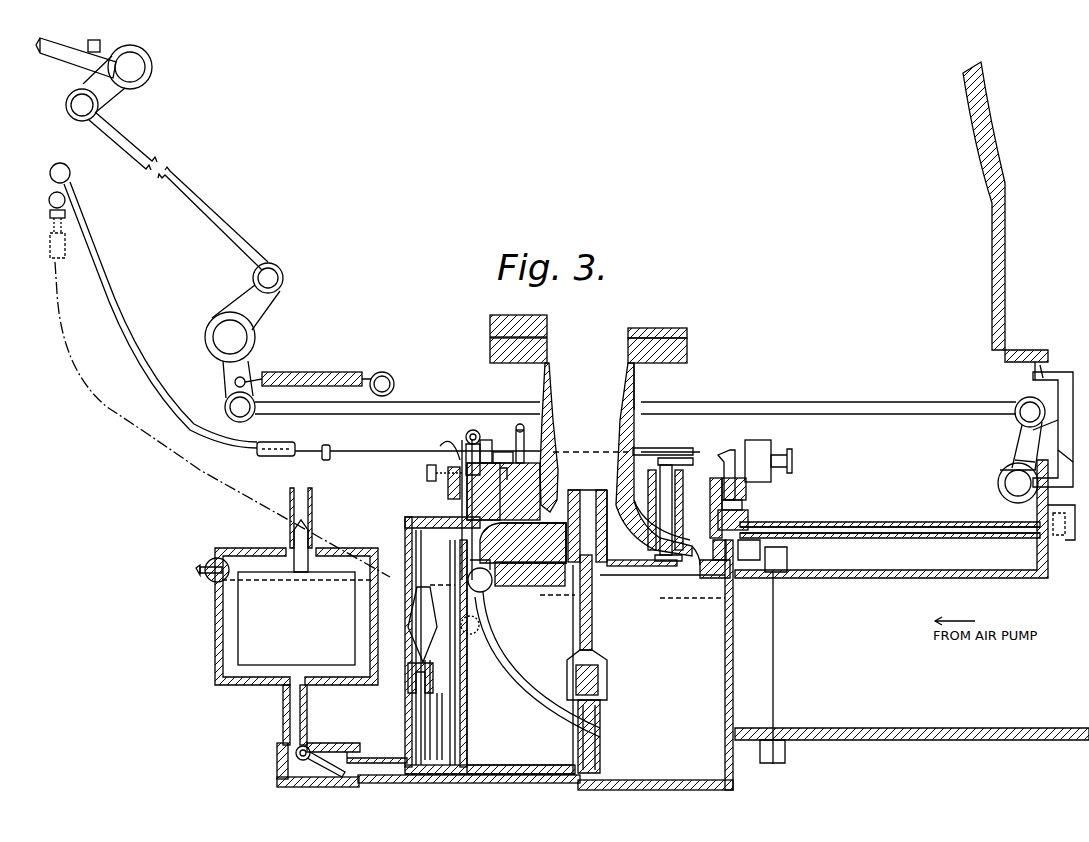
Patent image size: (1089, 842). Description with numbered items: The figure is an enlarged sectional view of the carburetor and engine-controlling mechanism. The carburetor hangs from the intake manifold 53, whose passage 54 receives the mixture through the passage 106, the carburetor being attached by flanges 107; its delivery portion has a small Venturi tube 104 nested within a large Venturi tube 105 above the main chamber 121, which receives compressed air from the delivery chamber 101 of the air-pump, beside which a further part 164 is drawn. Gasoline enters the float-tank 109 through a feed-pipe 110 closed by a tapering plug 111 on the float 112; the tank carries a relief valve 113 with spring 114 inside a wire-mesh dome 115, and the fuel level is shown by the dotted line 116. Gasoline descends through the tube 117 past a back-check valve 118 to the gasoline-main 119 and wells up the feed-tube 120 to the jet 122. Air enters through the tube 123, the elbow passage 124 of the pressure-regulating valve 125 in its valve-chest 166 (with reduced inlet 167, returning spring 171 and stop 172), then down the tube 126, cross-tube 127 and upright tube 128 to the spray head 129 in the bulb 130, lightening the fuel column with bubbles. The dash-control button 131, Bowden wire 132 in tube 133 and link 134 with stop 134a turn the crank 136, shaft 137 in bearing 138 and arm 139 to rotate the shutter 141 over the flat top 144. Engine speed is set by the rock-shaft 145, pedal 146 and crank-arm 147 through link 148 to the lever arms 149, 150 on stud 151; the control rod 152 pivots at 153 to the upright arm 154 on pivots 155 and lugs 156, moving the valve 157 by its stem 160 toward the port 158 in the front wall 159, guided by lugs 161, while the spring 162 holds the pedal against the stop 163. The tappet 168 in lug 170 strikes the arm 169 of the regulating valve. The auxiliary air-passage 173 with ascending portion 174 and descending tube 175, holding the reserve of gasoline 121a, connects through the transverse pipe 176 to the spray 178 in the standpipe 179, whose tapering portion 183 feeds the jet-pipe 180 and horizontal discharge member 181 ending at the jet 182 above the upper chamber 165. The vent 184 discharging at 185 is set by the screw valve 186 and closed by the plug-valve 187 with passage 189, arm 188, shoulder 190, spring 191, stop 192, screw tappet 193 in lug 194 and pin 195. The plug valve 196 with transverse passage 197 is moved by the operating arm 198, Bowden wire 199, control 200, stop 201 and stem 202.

The intake manifold 53 is at (690, 331).
The passage 54 is at (548, 328).
The delivery chamber 101 is at (1050, 540).
The small Venturi tube 104 is at (600, 536).
The large Venturi tube 105 is at (620, 424).
The passage 106 is at (636, 380).
The flanges 107 is at (490, 351).
The float-tank 109 is at (215, 630).
The feed-pipe 110 is at (313, 496).
The tapering plug 111 is at (309, 570).
The float 112 is at (238, 624).
The air-pressure relief valve 113 is at (210, 582).
The spring 114 is at (200, 570).
The fire-proof wire meshing 115 is at (200, 565).
The gasoline level 116 is at (313, 584).
The tube 117 is at (307, 710).
The back-check valve 118 is at (335, 752).
The gasoline-main 119 is at (384, 784).
The feed-tube 120 is at (600, 716).
The main chamber 121 is at (662, 601).
The reserve of gasoline 121a is at (462, 748).
The jet 122 is at (592, 595).
The tube 123 is at (925, 533).
The elbow passage 124 is at (755, 528).
The pressure-regulating valve 125 is at (716, 550).
The tube 126 is at (733, 603).
The cross-tube 127 is at (682, 770).
The upright tube 128 is at (598, 752).
The spray head 129 is at (599, 672).
The bulb 130 is at (566, 663).
The dash-control button 131 is at (72, 173).
The Bowden wire 132 is at (197, 428).
The tube 133 is at (282, 438).
The link 134 is at (405, 451).
The stop 134a is at (330, 441).
The crank 136 is at (678, 470).
The vertical shaft 137 is at (660, 488).
The bearing 138 is at (656, 515).
The arm 139 is at (672, 548).
The shutter 141 is at (549, 543).
The flat top 144 is at (530, 574).
The transverse rock-shaft 145 is at (148, 58).
The pedal 146 is at (72, 63).
The crank-arm 147 is at (112, 103).
The link 148 is at (207, 213).
The lever arm 149 is at (258, 310).
The lever arm 150 is at (221, 373).
The stud 151 is at (206, 335).
The general control rod 152 is at (449, 401).
The pivot 153 is at (1017, 402).
The upright arm 154 is at (1015, 432).
The pivots 155 is at (1005, 492).
The lugs 156 is at (1000, 470).
The valve 157 is at (1035, 430).
The port 158 is at (1040, 386).
The front wall 159 is at (1015, 460).
The stem 160 is at (1055, 441).
The lugs 161 is at (1062, 370).
The spring 162 is at (305, 371).
The stop 163 is at (110, 41).
The plug 164 is at (1065, 512).
The upper chamber 165 is at (533, 543).
The valve-chest 166 is at (740, 515).
The reduced inlet 167 is at (757, 554).
The tappet 168 is at (759, 451).
The arm 169 is at (727, 452).
The lug 170 is at (783, 452).
The returning spring 171 is at (747, 486).
The stop 172 is at (718, 515).
The auxiliary air-passage 173 is at (495, 586).
The ascending portion 174 is at (496, 491).
The descending tube 175 is at (475, 727).
The transverse pipe 176 is at (440, 775).
The spray 178 is at (408, 690).
The auxiliary standpipe 179 is at (425, 657).
The jet-pipe 180 is at (412, 548).
The horizontal discharge member 181 is at (508, 491).
The jet 182 is at (581, 520).
The tapering portion 183 is at (410, 630).
The vent 184 is at (430, 520).
The vent discharge 185 is at (460, 445).
The pointed screw valve 186 is at (440, 447).
The plug-valve 187 is at (427, 469).
The arm 188 is at (464, 445).
The vertical passage 189 is at (448, 483).
The shoulder 190 is at (552, 462).
The spring 191 is at (493, 440).
The stop 192 is at (520, 470).
The screw tappet 193 is at (520, 425).
The lug 194 is at (497, 450).
The pin 195 is at (471, 430).
The plug valve 196 is at (498, 603).
The transverse passage 197 is at (523, 543).
The operating arm 198 is at (473, 630).
The Bowden wire 199 is at (338, 543).
The control 200 is at (49, 201).
The stop 201 is at (66, 214).
The stem 202 is at (53, 225).